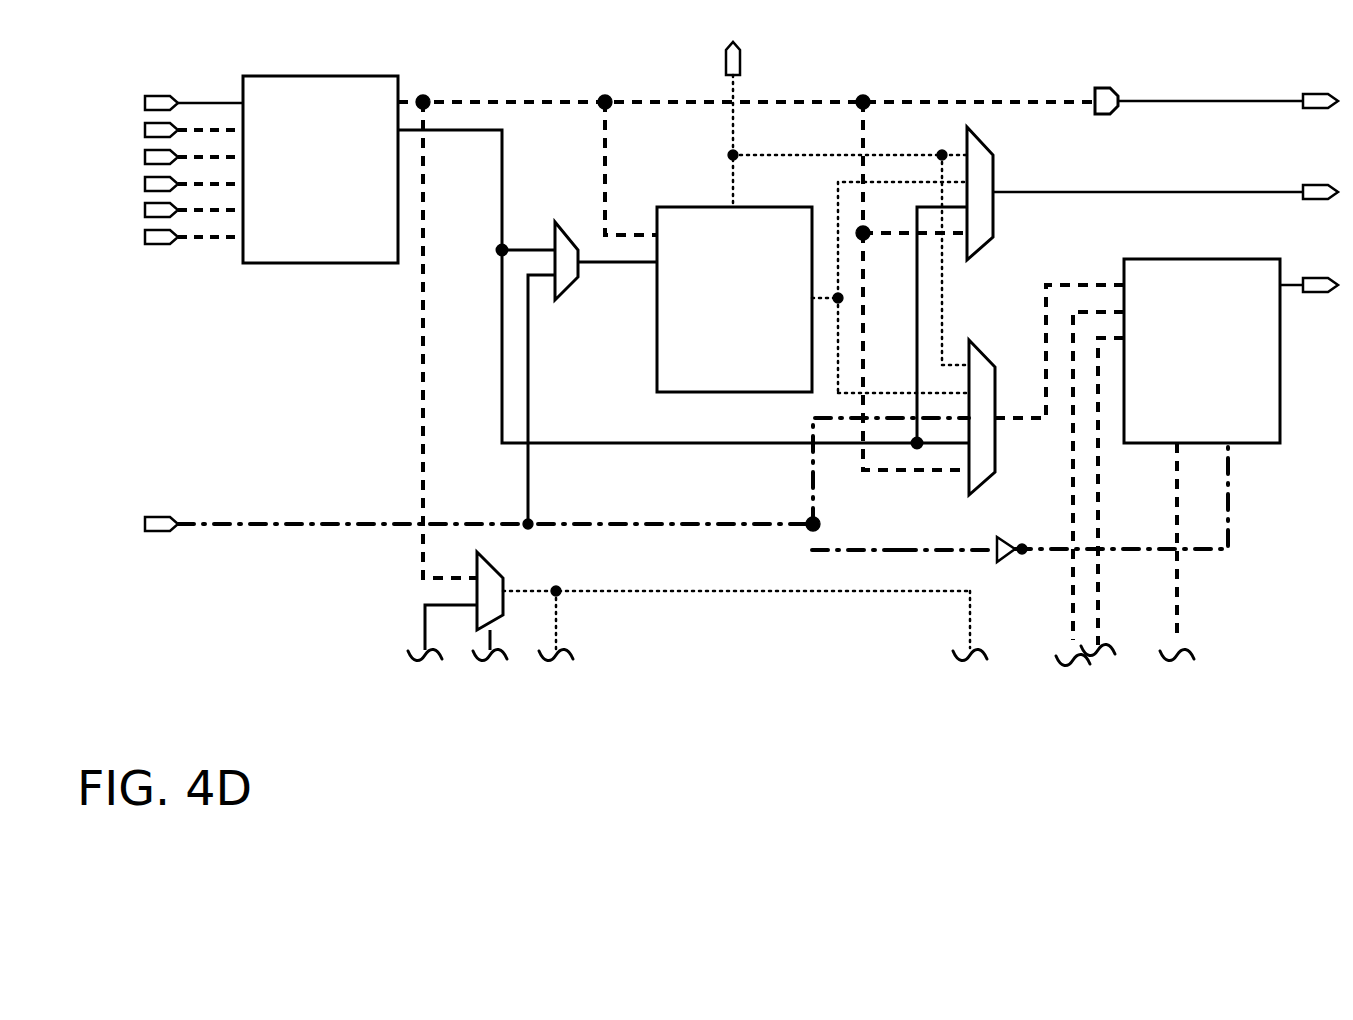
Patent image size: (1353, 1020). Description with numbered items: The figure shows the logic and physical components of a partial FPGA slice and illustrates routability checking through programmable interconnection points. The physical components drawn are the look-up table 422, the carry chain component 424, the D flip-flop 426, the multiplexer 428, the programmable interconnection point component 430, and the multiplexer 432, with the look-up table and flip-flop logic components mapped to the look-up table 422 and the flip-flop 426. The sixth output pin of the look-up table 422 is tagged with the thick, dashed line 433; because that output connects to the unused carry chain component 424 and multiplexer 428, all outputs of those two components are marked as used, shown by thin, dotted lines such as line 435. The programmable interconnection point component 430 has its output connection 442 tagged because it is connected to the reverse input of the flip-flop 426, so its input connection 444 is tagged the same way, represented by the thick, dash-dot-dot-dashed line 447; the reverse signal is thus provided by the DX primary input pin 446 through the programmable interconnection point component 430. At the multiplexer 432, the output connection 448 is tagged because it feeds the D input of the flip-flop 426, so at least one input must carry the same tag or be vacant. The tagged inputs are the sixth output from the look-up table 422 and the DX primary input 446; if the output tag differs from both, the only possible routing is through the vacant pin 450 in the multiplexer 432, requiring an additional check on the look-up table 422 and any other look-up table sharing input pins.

The D6LUT 422 is at (320, 169).
The CARRY4 424 is at (734, 299).
The D flip-flop (DFF) 426 is at (1202, 352).
The MUX 428 is at (495, 570).
The programmable interconnection point (PIP) component 430 is at (1012, 565).
The MUX 432 is at (1012, 328).
The thick, dashed line 433 is at (472, 102).
The thin, dotted line 435 is at (733, 125).
The output connection 442 is at (1023, 549).
The input connection 444 is at (990, 553).
The DX primary input pin 446 is at (160, 535).
The thick, dash-dot-dot-dashed line 447 is at (828, 550).
The output connection 448 is at (997, 418).
The vacant pin 450 is at (966, 447).